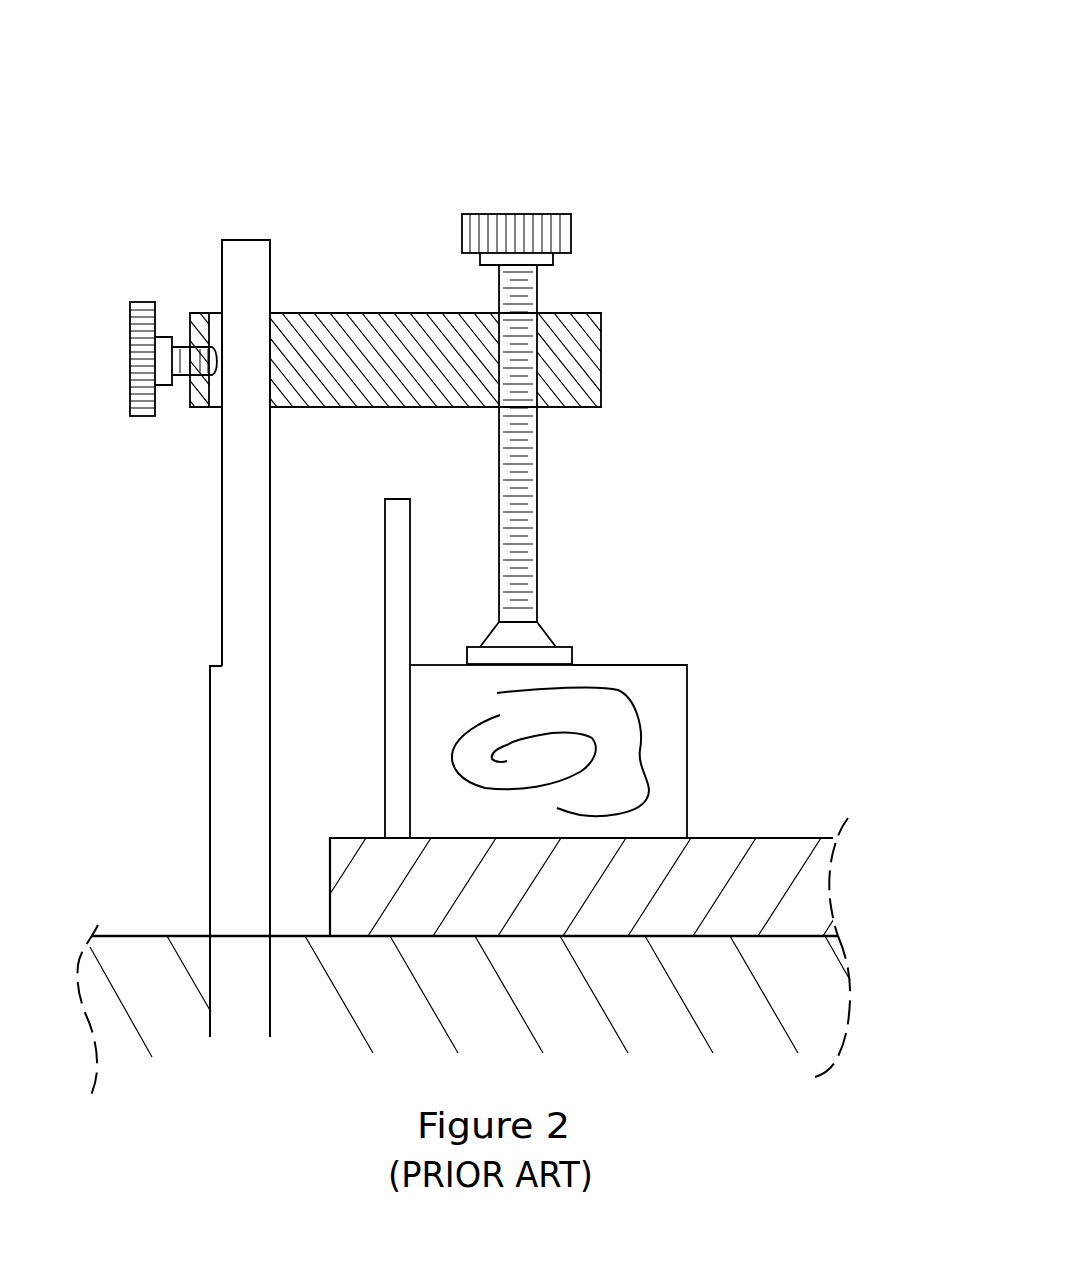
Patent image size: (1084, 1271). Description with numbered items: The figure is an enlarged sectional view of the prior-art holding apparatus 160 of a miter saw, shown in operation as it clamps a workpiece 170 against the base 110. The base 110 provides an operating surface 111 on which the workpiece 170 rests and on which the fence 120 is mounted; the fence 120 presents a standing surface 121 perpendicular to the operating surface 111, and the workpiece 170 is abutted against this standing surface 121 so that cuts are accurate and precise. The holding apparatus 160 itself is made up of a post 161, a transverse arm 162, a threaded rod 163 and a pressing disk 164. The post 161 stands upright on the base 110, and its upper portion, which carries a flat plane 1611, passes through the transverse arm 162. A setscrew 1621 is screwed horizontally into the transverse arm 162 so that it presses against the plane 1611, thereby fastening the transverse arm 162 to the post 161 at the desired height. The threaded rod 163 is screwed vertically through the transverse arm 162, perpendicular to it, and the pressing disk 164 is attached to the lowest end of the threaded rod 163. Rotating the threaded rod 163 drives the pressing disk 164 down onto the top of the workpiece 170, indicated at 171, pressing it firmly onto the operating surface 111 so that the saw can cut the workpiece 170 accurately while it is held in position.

The base 110 is at (878, 907).
The operating surface 111 is at (705, 840).
The fence 120 is at (372, 648).
The standing surface 121 is at (409, 556).
The holding apparatus 160 is at (436, 124).
The post 161 is at (193, 638).
The plane 1611 is at (222, 589).
The transverse arm 162 is at (593, 345).
The setscrew 1621 is at (143, 307).
The threaded rod 163 is at (525, 300).
The pressing disk 164 is at (560, 656).
The workpiece 170 is at (677, 762).
The top surface of workpiece 171 is at (645, 665).